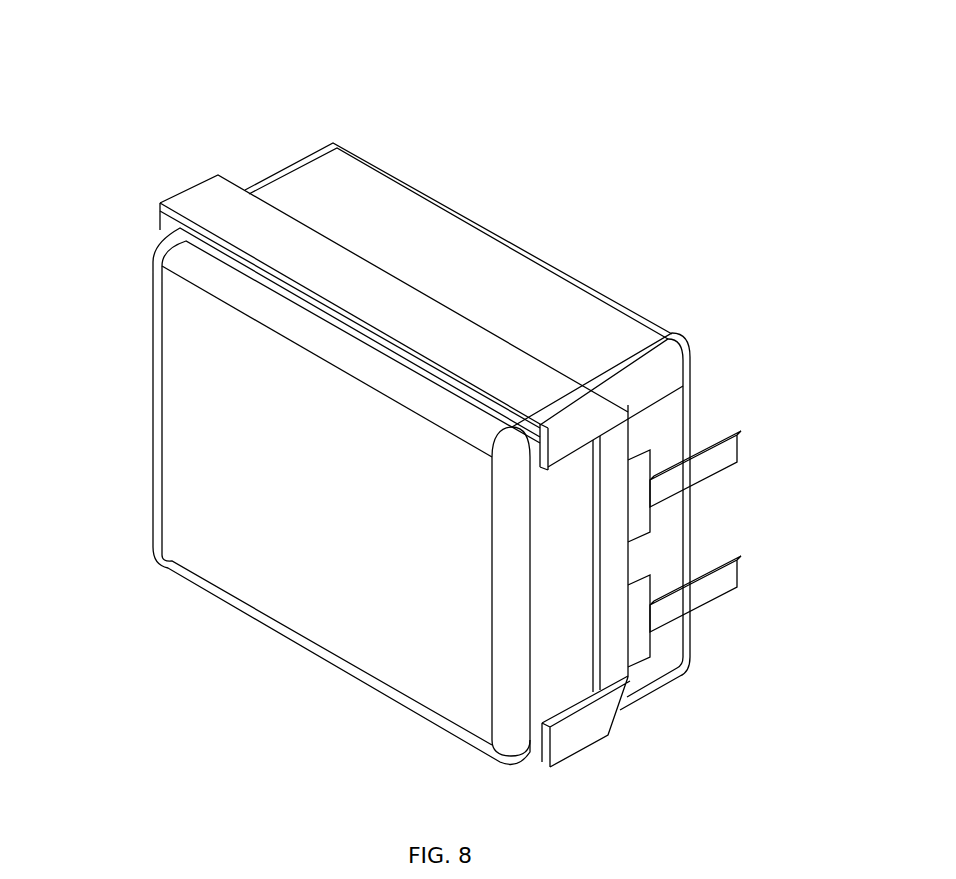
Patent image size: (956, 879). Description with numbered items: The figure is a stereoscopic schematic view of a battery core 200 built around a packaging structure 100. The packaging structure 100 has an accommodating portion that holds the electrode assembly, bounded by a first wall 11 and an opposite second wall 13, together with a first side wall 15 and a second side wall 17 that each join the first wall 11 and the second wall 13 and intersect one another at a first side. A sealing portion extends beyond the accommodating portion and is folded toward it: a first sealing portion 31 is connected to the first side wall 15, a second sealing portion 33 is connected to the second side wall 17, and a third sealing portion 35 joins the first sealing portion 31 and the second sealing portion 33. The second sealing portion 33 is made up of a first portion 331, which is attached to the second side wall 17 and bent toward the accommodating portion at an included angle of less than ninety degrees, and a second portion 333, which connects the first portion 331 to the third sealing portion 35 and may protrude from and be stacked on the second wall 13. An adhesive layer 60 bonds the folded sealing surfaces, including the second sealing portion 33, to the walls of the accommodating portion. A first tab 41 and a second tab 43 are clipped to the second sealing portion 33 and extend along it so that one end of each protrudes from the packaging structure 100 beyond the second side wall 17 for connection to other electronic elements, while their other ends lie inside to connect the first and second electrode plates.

The battery core 200 is at (430, 28).
The packaging structure 100 is at (146, 214).
The first wall 11 is at (303, 614).
The second wall 13 is at (692, 404).
The first side wall 15 is at (348, 175).
The second side wall 17 is at (669, 534).
The first sealing portion 31 is at (224, 203).
The second sealing portion 33 is at (671, 486).
The first portion 331 is at (612, 460).
The second portion 333 is at (600, 422).
The third sealing portion 35 is at (569, 428).
The first tab 41 is at (739, 446).
The second tab 43 is at (740, 567).
The adhesive layer 60 is at (421, 356).